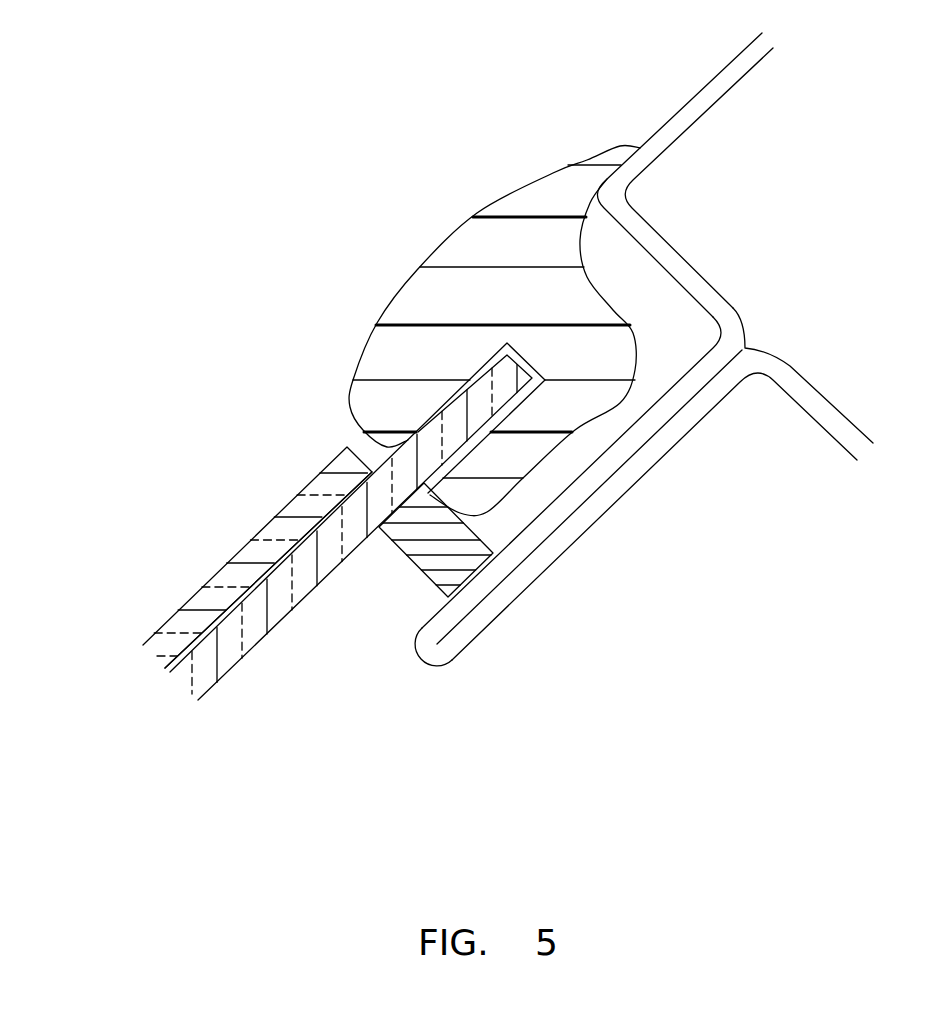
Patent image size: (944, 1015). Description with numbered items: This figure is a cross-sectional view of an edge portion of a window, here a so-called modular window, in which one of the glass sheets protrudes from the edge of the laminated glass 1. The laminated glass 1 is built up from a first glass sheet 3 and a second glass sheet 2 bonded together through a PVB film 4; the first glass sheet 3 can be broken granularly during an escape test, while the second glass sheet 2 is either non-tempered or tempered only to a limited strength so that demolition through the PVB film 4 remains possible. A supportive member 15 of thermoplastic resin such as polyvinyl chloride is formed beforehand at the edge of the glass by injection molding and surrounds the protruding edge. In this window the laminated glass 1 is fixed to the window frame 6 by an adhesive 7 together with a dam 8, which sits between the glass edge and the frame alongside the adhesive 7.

The laminated glass 1 is at (300, 564).
The second glass sheet 2 is at (183, 620).
The first glass sheet 3 is at (226, 649).
The PVB film 4 is at (243, 600).
The window frame 6 is at (743, 60).
The adhesive 7 is at (687, 337).
The dam 8 is at (413, 557).
The supportive member 15 is at (473, 232).